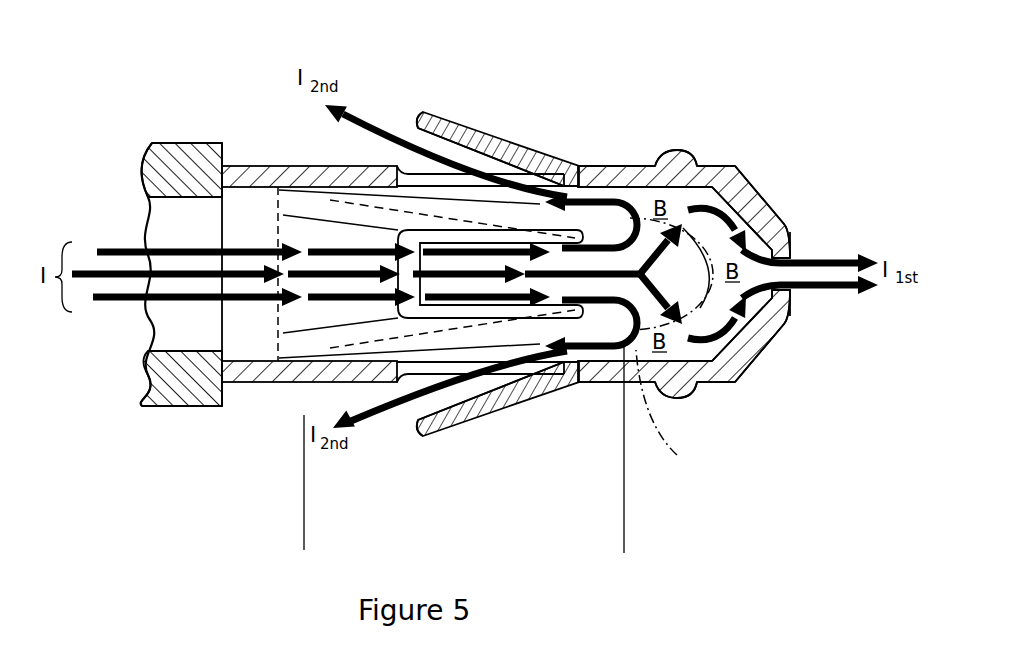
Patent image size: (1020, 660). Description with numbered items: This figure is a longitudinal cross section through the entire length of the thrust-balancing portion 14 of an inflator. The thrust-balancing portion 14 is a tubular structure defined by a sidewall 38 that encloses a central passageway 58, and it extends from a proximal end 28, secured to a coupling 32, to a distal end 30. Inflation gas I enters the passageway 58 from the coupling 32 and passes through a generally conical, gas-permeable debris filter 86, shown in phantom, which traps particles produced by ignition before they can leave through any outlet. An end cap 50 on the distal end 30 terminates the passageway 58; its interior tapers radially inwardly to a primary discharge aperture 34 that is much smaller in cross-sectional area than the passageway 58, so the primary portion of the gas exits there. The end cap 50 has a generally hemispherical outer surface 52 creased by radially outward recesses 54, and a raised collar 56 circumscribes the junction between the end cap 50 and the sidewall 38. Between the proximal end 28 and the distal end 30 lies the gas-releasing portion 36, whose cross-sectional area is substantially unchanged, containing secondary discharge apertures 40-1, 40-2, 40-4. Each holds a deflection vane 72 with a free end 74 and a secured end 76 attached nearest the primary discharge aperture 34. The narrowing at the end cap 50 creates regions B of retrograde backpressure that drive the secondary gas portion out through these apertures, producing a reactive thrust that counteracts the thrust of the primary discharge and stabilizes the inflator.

The thrust-balancing portion 14 is at (133, 62).
The proximal end 28 is at (258, 165).
The distal end 30 is at (646, 163).
The coupling 32 is at (133, 152).
The primary discharge aperture 34 is at (782, 256).
The gas-releasing portion 36 is at (624, 533).
The sidewall 38 is at (330, 160).
The secondary discharge aperture 40-1 is at (380, 312).
The secondary discharge aperture 40-2 is at (466, 92).
The secondary discharge aperture 40-4 is at (540, 410).
The end cap 50 is at (852, 177).
The outer surface 52 is at (748, 167).
The recess 54 is at (767, 190).
The raised collar 56 is at (697, 147).
The passageway 58 is at (256, 350).
The deflection vane 72 is at (477, 114).
The free end 74 is at (423, 111).
The secured end 76 is at (566, 172).
The debris filter 86 is at (272, 203).